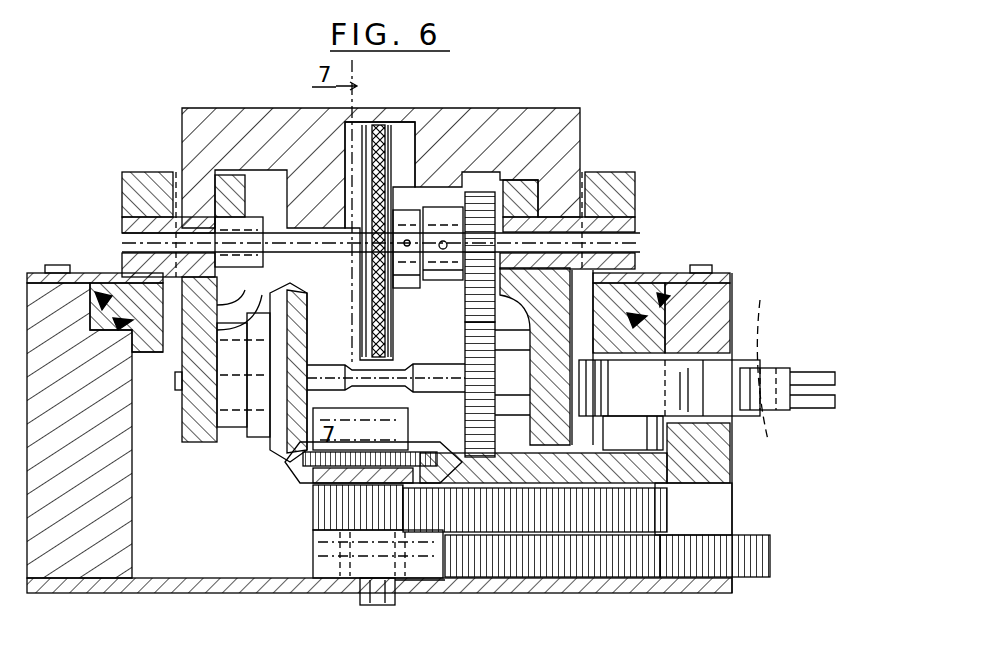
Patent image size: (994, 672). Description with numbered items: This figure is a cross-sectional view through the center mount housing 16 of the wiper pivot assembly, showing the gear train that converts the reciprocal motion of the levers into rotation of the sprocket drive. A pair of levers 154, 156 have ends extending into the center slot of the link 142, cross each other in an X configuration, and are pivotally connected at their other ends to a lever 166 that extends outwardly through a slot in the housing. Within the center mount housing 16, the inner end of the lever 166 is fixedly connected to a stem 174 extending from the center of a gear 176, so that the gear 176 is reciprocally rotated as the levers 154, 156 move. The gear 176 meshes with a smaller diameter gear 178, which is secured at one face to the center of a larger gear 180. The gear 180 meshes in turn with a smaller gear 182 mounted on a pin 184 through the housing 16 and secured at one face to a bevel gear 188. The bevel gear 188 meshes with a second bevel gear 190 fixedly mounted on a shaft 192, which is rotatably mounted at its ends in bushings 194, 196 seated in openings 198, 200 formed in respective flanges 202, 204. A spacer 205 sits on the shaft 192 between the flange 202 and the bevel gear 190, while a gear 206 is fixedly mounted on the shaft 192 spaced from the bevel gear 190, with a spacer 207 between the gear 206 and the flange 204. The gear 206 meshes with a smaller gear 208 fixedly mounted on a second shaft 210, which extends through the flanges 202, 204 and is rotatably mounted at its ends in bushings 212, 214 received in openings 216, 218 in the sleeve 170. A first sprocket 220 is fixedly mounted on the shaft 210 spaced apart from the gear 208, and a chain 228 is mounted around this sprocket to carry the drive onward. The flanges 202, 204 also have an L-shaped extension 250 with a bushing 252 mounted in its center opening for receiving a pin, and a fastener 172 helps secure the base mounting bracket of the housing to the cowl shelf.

The center mount housing 16 is at (68, 570).
The link 142 is at (602, 433).
The lever 154 is at (822, 410).
The lever 156 is at (800, 366).
The lever 166 is at (767, 358).
The sleeve 170 is at (141, 172).
The fastener 172 is at (243, 107).
The stem 174 is at (678, 430).
The gear 176 is at (750, 537).
The gear 178 is at (478, 565).
The gear 180 is at (657, 497).
The gear 182 is at (313, 515).
The pin 184 is at (365, 600).
The bevel gear 188 is at (300, 480).
The bevel gear 190 is at (306, 296).
The shaft 192 is at (326, 372).
The bushing 194 is at (200, 442).
The bushing 196 is at (575, 428).
The opening 198 is at (181, 383).
The opening 200 is at (592, 302).
The flange 202 is at (175, 412).
The flange 204 is at (565, 373).
The spacer 205 is at (248, 305).
The gear 206 is at (466, 338).
The spacer 207 is at (466, 311).
The gear 208 is at (478, 192).
The shaft 210 is at (641, 243).
The bushing 212 is at (628, 216).
The bushing 214 is at (125, 223).
The opening 216 is at (641, 262).
The opening 218 is at (125, 262).
The first sprocket 220 is at (421, 116).
The chain 228 is at (380, 125).
The L-shaped extension 250 is at (313, 555).
The bushing 252 is at (398, 588).